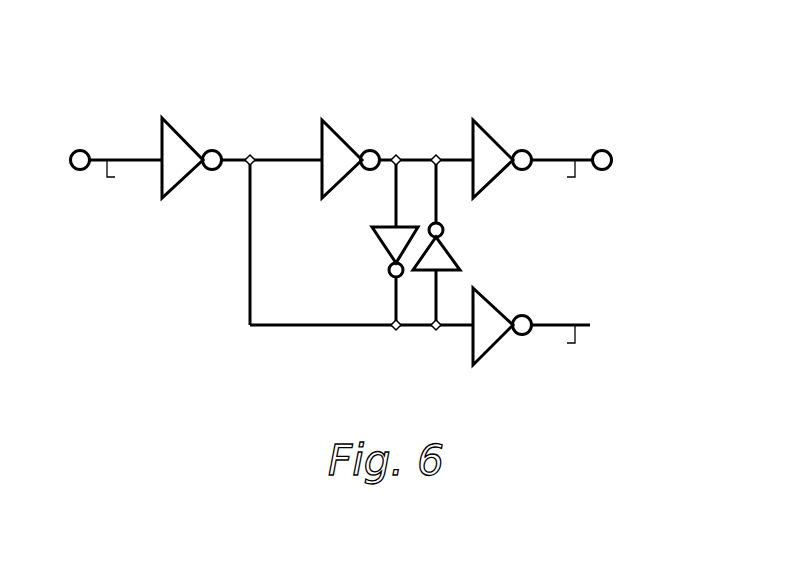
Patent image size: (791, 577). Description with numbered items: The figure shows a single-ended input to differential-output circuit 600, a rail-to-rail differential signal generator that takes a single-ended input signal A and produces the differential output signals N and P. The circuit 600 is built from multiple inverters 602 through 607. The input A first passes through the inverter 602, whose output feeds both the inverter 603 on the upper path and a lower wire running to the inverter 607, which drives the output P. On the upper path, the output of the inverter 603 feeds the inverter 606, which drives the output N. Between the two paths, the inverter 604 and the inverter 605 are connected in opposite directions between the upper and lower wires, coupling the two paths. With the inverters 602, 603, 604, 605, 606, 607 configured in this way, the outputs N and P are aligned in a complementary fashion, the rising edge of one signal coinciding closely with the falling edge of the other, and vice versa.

The single-ended input to differential-output circuit 600 is at (138, 65).
The inverter 602 is at (193, 140).
The inverter 603 is at (350, 140).
The inverter 604 is at (382, 250).
The inverter 605 is at (447, 248).
The inverter 606 is at (500, 140).
The inverter 607 is at (498, 347).